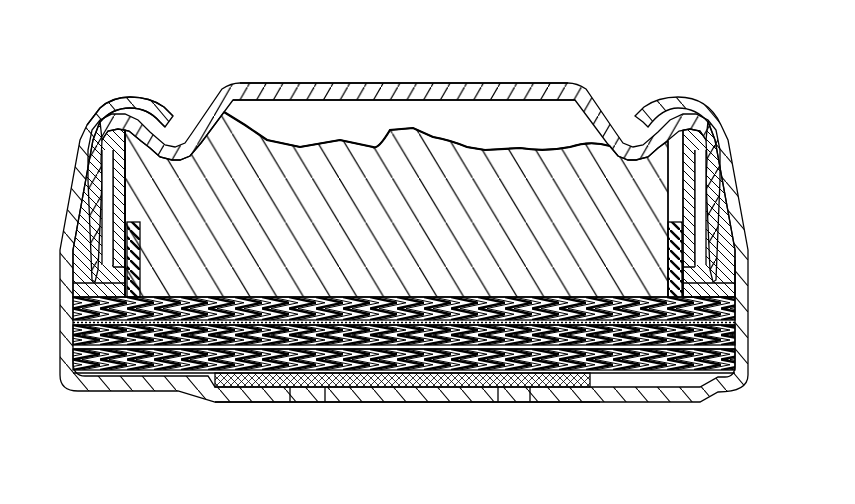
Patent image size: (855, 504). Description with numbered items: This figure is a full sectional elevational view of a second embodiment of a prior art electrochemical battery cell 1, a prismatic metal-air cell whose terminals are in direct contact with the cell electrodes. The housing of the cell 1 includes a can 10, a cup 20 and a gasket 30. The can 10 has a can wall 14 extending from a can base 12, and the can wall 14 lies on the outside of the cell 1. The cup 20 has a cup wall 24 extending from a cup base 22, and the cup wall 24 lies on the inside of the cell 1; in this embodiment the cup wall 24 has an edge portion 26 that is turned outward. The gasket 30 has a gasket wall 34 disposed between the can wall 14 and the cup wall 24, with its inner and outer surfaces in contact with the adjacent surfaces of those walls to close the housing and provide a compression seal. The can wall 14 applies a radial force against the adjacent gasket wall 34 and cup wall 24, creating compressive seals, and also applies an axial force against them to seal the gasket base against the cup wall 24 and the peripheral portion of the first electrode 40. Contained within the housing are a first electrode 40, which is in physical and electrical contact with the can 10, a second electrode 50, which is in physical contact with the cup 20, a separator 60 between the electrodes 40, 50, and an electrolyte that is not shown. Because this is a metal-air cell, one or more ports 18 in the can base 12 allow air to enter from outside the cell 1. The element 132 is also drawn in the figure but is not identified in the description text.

The electrochemical battery cell 1 is at (236, 75).
The can 10 is at (233, 410).
The can base 12 is at (397, 396).
The can wall 14 is at (60, 330).
The port 18 is at (504, 410).
The cup 20 is at (404, 156).
The cup base 22 is at (402, 90).
The cup wall 24 is at (700, 204).
The edge portion 26 is at (722, 260).
The gasket 30 is at (114, 112).
The gasket wall 34 is at (90, 207).
The first electrode 40 is at (727, 362).
The second electrode 50 is at (393, 141).
The separator 60 is at (728, 300).
The current collector tab 132 is at (135, 284).